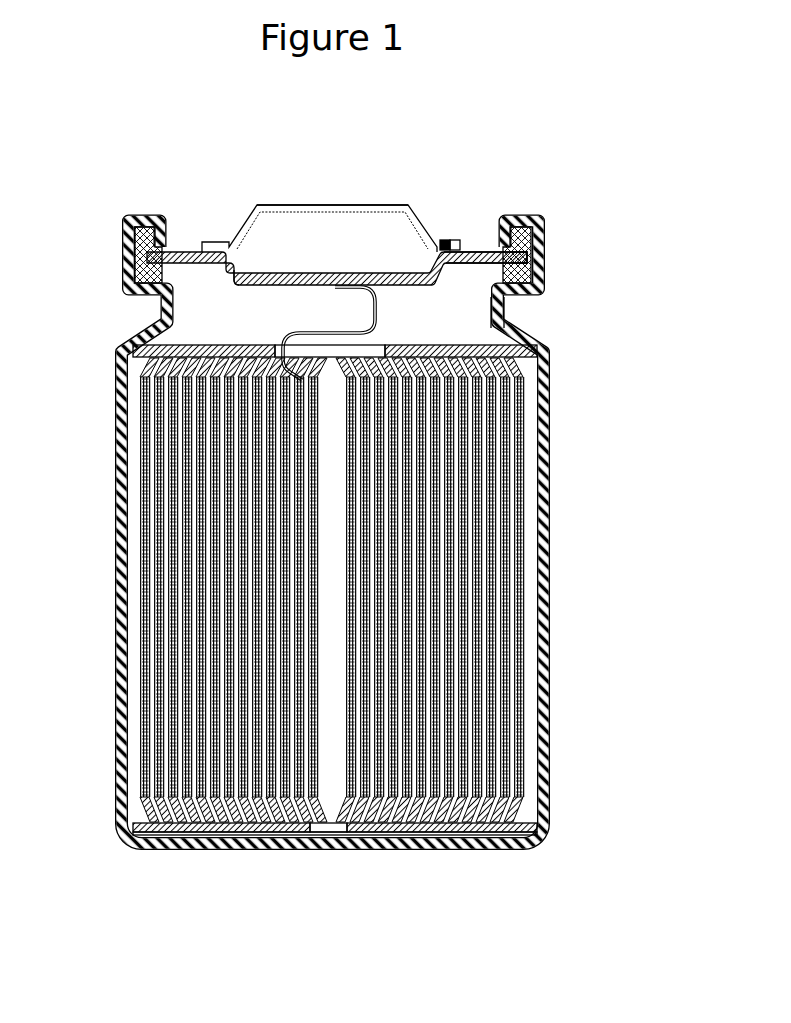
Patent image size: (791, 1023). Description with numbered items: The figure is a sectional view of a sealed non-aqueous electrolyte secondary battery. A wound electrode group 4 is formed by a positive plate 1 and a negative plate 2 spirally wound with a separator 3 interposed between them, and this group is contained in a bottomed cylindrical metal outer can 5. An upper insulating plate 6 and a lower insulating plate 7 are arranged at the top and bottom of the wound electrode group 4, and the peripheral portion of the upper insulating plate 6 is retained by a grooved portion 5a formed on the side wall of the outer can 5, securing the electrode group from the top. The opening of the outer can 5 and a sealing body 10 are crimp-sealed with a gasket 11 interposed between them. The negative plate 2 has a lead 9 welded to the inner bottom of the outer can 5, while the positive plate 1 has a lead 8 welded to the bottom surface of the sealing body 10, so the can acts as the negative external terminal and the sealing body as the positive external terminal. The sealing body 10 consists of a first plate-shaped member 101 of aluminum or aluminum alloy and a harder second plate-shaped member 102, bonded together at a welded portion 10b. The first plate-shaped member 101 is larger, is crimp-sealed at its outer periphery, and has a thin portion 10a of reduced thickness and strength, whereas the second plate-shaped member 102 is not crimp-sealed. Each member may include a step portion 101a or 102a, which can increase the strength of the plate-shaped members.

The positive plate 1 is at (510, 465).
The negative plate 2 is at (523, 522).
The separator 3 is at (553, 370).
The wound electrode group 4 is at (388, 589).
The outer can 5 is at (182, 846).
The grooved portion 5a is at (506, 308).
The upper insulating plate 6 is at (150, 355).
The lower insulating plate 7 is at (145, 826).
The lead 8 is at (285, 334).
The lead 9 is at (508, 845).
The sealing body 10 is at (383, 201).
The thin portion 10a is at (478, 252).
The welded portion 10b is at (537, 268).
The gasket 11 is at (143, 218).
The first plate-shaped member 101 is at (340, 273).
The step portion 101a is at (236, 282).
The second plate-shaped member 102 is at (423, 226).
The step portion 102a is at (257, 207).